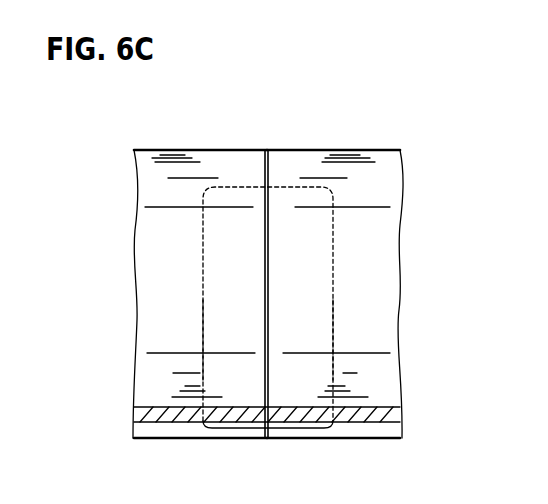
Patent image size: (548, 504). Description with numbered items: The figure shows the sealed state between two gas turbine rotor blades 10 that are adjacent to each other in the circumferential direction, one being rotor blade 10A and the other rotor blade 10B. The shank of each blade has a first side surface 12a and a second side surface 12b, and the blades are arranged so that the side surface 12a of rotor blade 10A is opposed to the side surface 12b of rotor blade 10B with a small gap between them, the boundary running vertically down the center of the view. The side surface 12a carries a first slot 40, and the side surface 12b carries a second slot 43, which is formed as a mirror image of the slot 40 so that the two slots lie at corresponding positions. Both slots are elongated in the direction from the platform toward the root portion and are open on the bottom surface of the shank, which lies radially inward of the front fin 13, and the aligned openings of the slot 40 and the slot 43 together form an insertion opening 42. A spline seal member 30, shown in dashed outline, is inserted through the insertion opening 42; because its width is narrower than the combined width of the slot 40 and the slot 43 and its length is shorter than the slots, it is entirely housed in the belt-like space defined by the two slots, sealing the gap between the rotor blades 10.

The rotor blade 10 is at (297, 258).
The rotor blade 10A is at (183, 150).
The rotor blade 10B is at (352, 150).
The first side surface 12a is at (270, 228).
The second side surface 12b is at (266, 203).
The front fin 13 is at (168, 412).
The spline seal member 30 is at (303, 233).
The first slot 40 is at (203, 242).
The insertion opening 42 is at (335, 427).
The second slot 43 is at (332, 262).